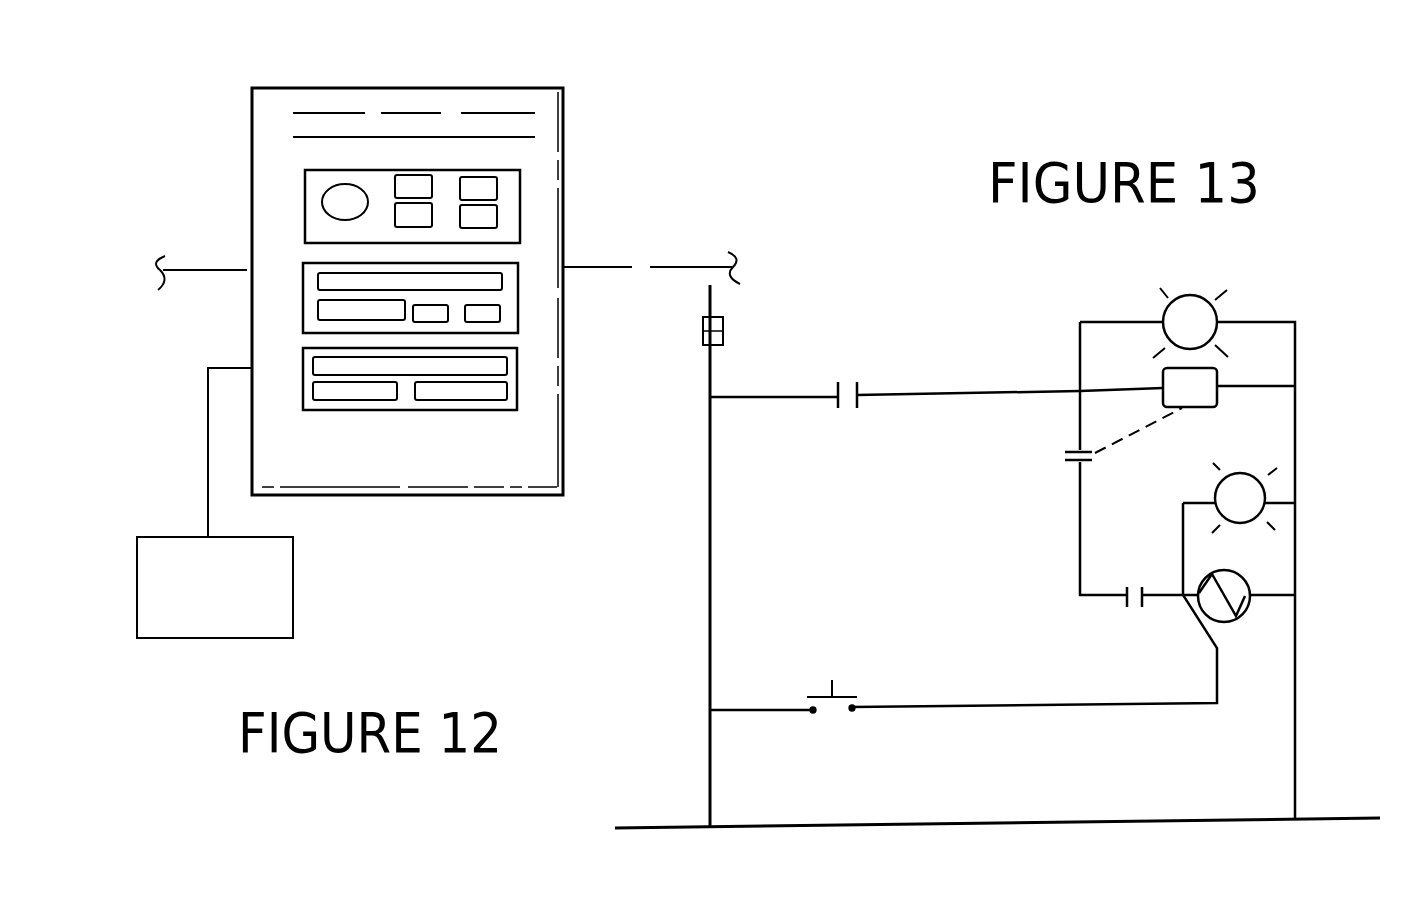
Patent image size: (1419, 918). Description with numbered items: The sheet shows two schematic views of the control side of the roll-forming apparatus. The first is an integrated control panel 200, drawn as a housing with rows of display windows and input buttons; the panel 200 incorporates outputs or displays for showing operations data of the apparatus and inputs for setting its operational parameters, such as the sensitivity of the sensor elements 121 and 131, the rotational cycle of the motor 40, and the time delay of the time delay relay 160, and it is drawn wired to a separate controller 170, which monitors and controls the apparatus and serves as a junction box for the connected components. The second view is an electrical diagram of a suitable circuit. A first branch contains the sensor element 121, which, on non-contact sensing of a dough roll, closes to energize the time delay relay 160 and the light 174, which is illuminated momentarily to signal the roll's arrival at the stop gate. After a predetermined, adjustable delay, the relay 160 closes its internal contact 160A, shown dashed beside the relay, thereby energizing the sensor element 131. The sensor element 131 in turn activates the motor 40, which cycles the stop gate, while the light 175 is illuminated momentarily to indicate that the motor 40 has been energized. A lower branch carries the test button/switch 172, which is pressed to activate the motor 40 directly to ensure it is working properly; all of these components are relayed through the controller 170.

In FIG. 12, the integrated control panel 200 is at (555, 170).
In FIG. 12, the controller 170 is at (283, 603).
In FIG. 13, the sensor element 121 is at (858, 387).
In FIG. 13, the indicator light 174 is at (1210, 317).
In FIG. 13, the time delay relay 160 is at (1195, 397).
In FIG. 13, the internal contact 160A is at (1068, 462).
In FIG. 13, the indicator light 175 is at (1267, 493).
In FIG. 13, the motor 40 is at (1248, 618).
In FIG. 13, the sensor element 131 is at (1127, 613).
In FIG. 13, the test button/switch 172 is at (848, 695).